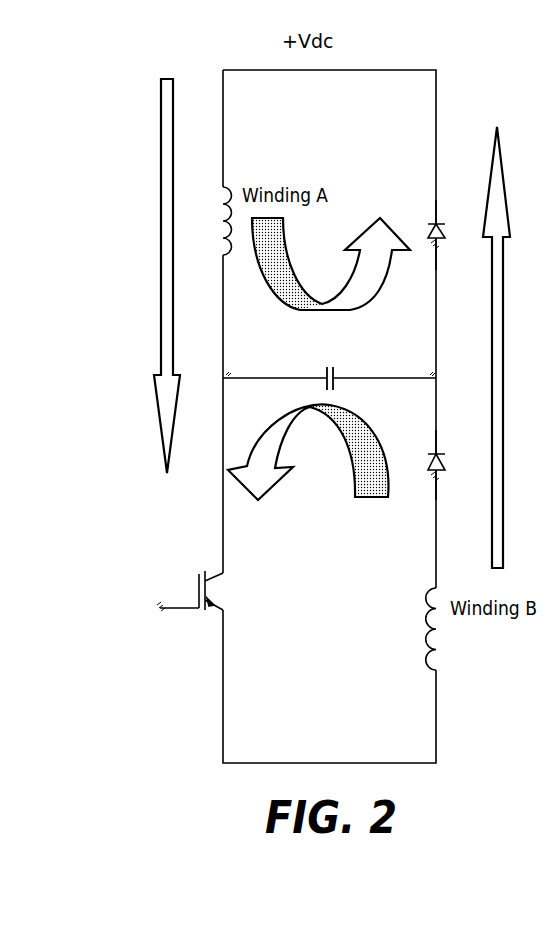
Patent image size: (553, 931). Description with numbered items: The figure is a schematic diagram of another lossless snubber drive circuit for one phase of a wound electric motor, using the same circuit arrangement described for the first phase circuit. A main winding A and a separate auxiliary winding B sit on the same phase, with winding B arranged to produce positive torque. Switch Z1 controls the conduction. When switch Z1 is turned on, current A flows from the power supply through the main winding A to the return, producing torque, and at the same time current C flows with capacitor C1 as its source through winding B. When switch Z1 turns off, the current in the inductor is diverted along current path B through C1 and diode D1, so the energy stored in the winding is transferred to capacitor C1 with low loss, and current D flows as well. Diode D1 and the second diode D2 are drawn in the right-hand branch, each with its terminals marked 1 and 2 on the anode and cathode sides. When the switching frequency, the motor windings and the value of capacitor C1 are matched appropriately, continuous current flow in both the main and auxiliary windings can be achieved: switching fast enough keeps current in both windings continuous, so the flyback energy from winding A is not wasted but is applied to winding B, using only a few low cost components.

The current A is at (167, 262).
The current path B is at (331, 272).
The current C is at (308, 452).
The current D is at (508, 347).
The diode D1 is at (453, 235).
The diode D2 is at (451, 467).
The capacitor C1 is at (336, 363).
The switch Z1 is at (216, 582).
The diode anode terminal 1 is at (421, 369).
The diode cathode terminal 2 is at (421, 327).